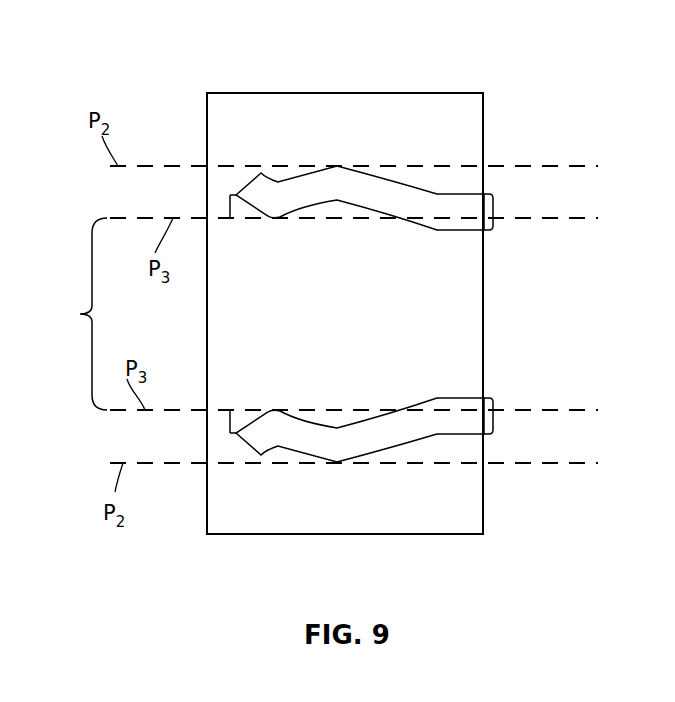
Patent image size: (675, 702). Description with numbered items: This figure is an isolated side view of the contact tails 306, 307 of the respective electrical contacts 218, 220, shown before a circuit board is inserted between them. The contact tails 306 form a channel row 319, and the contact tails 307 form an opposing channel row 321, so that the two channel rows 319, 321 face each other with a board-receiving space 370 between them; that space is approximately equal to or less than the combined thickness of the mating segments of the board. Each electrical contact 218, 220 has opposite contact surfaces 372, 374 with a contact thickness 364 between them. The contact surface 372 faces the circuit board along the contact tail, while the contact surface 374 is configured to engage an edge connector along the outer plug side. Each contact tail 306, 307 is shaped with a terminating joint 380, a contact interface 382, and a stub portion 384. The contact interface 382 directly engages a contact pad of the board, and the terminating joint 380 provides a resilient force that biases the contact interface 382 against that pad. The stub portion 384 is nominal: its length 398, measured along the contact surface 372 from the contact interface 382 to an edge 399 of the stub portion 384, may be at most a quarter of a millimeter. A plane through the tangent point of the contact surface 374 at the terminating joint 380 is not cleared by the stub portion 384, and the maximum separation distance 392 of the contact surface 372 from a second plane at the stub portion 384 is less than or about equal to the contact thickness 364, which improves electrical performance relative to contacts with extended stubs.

The contact tail 306 is at (403, 124).
The contact tail 307 is at (302, 488).
The electrical contact 218 is at (462, 194).
The electrical contact 220 is at (453, 435).
The channel row 319 is at (206, 207).
The channel row 321 is at (206, 422).
The contact thickness 364 is at (494, 212).
The board-receiving space 370 is at (317, 314).
The contact surface 372 is at (470, 233).
The contact surface 374 is at (450, 181).
The terminating joint 380 is at (342, 152).
The contact interface 382 is at (283, 229).
The stub portion 384 is at (268, 166).
The maximum separation distance 392 is at (227, 203).
The length 398 is at (253, 208).
The edge 399 is at (243, 182).